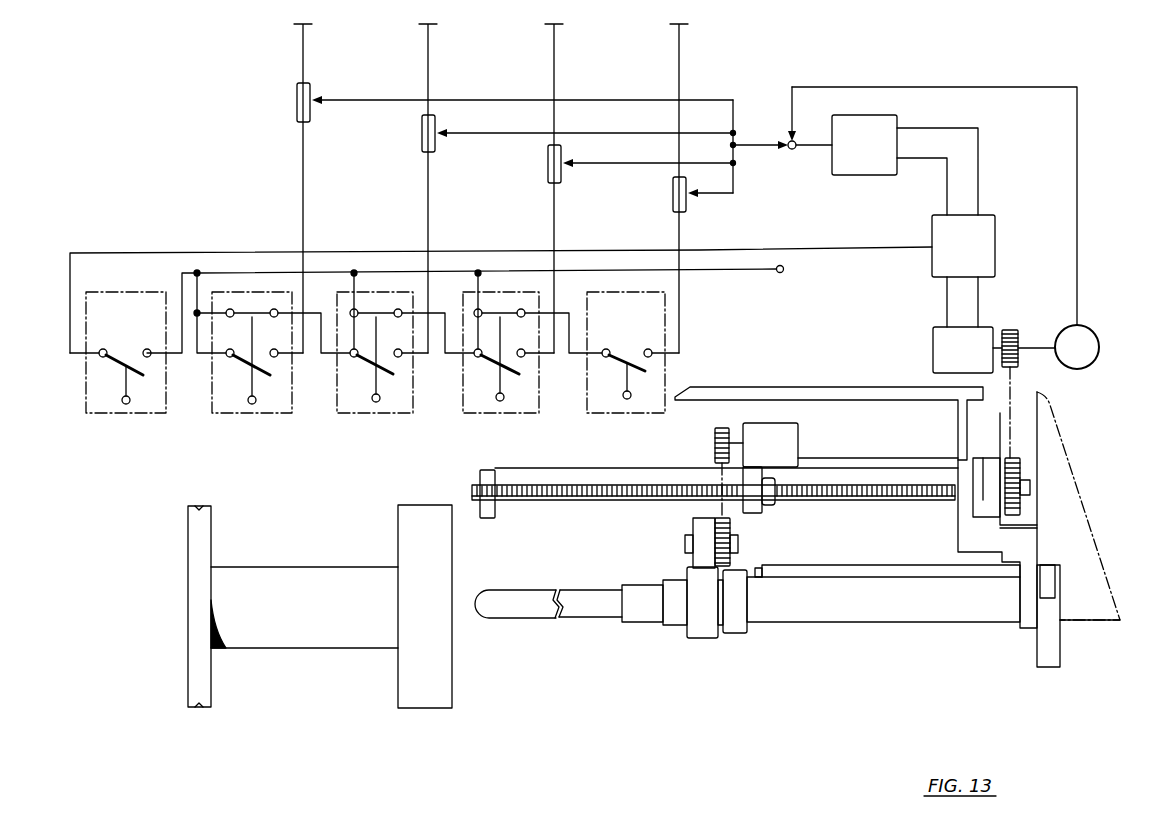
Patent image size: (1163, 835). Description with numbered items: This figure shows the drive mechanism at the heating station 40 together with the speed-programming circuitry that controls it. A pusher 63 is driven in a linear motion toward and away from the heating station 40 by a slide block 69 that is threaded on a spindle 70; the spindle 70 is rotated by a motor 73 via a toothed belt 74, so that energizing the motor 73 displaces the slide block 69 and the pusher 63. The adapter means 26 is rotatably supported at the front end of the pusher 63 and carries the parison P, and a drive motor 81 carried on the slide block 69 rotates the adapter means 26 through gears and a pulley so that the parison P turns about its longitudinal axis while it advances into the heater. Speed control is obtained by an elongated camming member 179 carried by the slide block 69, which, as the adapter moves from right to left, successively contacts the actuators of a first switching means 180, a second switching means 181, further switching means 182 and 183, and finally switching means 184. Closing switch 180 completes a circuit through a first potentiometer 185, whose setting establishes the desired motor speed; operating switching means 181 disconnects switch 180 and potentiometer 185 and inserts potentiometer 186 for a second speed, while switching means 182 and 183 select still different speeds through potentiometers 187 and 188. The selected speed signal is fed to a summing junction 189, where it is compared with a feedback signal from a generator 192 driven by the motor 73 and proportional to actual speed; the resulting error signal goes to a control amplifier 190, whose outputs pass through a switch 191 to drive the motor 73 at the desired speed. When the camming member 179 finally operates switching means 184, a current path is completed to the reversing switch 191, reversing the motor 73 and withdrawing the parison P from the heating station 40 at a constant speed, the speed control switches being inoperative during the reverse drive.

The potentiometer 188 is at (311, 118).
The potentiometer 187 is at (435, 149).
The potentiometer 186 is at (561, 179).
The first potentiometer 185 is at (686, 208).
The summing junction 189 is at (792, 150).
The control amplifier 190 is at (887, 165).
The reversing switch 191 is at (963, 271).
The motor 73 is at (994, 392).
The generator 192 is at (1090, 352).
The switching means 184 is at (150, 405).
The switching means 183 is at (274, 405).
The switching means 182 is at (399, 405).
The second switching means 181 is at (524, 405).
The first switching means 180 is at (650, 405).
The elongated camming member 179 is at (772, 385).
The slide block 69 is at (862, 380).
The spindle 70 is at (917, 498).
The drive motor 81 is at (756, 470).
The adapter means 26 is at (833, 516).
The toothed belt 74 is at (1040, 398).
The pusher 63 is at (875, 608).
The parison P is at (530, 610).
The heating station 40 is at (446, 727).